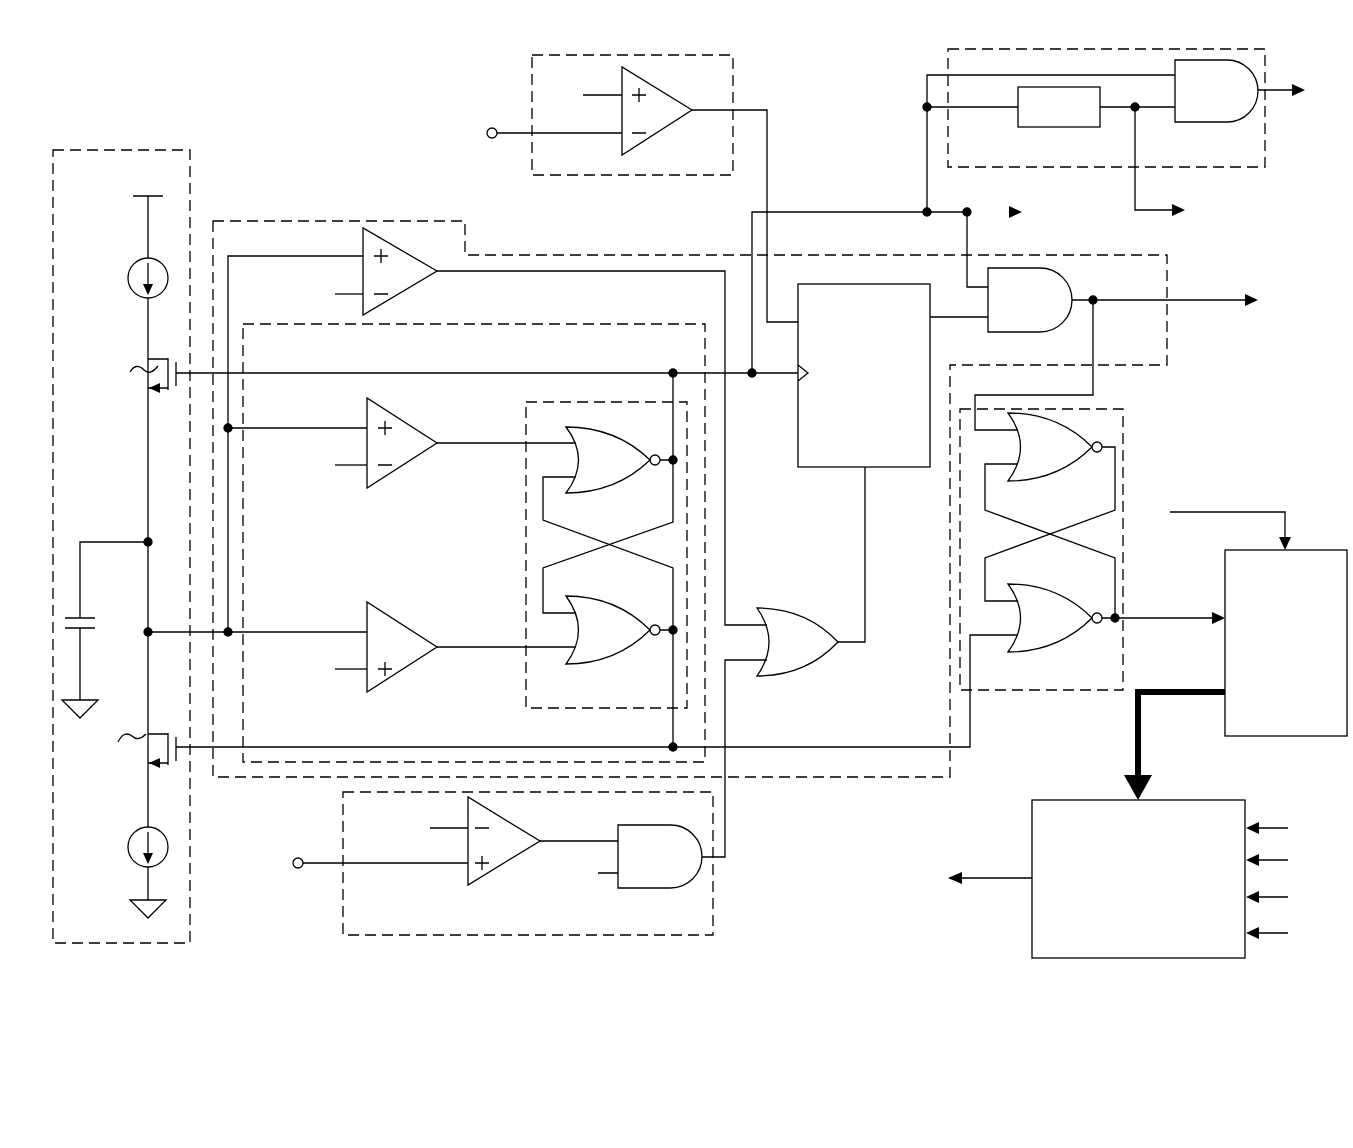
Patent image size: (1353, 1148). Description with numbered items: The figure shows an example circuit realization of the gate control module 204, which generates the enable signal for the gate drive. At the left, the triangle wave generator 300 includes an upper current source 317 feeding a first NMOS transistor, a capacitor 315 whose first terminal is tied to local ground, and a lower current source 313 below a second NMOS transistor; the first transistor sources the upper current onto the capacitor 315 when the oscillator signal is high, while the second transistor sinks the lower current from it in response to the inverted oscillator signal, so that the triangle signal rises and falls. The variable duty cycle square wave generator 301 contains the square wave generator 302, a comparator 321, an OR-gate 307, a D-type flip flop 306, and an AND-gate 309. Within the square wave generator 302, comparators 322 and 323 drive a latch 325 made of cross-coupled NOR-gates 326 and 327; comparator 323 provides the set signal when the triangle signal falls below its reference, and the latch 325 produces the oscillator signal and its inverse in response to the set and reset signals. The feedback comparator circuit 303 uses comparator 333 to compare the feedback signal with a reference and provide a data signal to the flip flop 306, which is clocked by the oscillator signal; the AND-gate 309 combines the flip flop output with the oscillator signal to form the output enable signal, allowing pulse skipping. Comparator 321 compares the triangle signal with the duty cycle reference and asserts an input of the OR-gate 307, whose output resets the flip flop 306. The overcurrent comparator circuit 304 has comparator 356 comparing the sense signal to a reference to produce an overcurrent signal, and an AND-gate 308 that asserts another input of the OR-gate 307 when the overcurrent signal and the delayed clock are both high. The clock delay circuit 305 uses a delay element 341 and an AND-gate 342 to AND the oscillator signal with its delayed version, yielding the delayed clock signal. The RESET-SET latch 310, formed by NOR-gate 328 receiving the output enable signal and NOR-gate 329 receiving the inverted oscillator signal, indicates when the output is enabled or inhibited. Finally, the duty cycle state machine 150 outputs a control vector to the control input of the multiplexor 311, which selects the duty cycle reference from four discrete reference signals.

The gate control module 204 is at (145, 96).
The triangle wave generator 300 is at (104, 147).
The variable duty cycle square wave generator 301 is at (240, 222).
The square wave generator 302 is at (548, 324).
The feedback comparator circuit 303 is at (530, 155).
The overcurrent comparator circuit 304 is at (343, 926).
The clock delay circuit 305 is at (1262, 168).
The D-type flip flop 306 is at (798, 467).
The OR-gate 307 is at (808, 672).
The AND-gate 308 is at (652, 888).
The AND-gate 309 is at (1032, 332).
The RESET-SET latch 310 is at (1022, 694).
The multiplexor 311 is at (1056, 798).
The current source 313 is at (136, 833).
The capacitor 315 is at (80, 626).
The current source 317 is at (137, 296).
The comparator 321 is at (412, 290).
The comparator 322 is at (414, 462).
The comparator 323 is at (416, 667).
The latch 325 is at (526, 548).
The NOR-gate 326 is at (610, 493).
The NOR-gate 327 is at (596, 664).
The NOR-gate 328 is at (1047, 481).
The NOR-gate 329 is at (1040, 652).
The comparator 333 is at (670, 132).
The delay element 341 is at (1082, 129).
The AND-gate 342 is at (1207, 122).
The comparator 356 is at (488, 866).
The duty cycle state machine 150 is at (1283, 738).